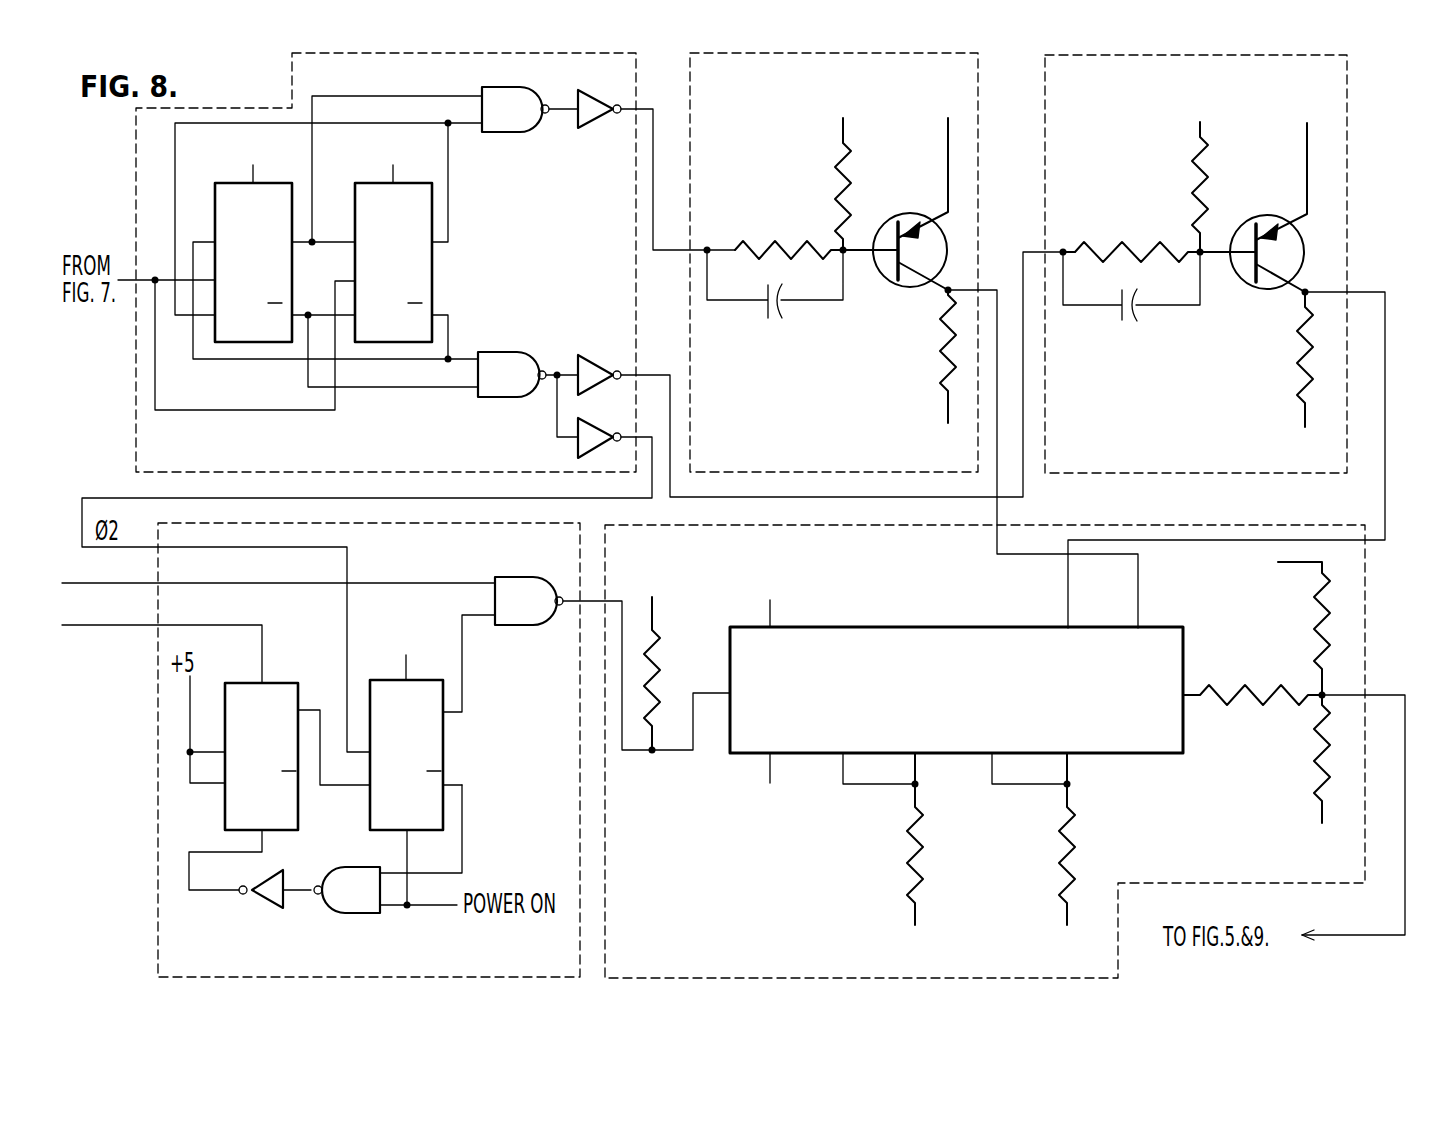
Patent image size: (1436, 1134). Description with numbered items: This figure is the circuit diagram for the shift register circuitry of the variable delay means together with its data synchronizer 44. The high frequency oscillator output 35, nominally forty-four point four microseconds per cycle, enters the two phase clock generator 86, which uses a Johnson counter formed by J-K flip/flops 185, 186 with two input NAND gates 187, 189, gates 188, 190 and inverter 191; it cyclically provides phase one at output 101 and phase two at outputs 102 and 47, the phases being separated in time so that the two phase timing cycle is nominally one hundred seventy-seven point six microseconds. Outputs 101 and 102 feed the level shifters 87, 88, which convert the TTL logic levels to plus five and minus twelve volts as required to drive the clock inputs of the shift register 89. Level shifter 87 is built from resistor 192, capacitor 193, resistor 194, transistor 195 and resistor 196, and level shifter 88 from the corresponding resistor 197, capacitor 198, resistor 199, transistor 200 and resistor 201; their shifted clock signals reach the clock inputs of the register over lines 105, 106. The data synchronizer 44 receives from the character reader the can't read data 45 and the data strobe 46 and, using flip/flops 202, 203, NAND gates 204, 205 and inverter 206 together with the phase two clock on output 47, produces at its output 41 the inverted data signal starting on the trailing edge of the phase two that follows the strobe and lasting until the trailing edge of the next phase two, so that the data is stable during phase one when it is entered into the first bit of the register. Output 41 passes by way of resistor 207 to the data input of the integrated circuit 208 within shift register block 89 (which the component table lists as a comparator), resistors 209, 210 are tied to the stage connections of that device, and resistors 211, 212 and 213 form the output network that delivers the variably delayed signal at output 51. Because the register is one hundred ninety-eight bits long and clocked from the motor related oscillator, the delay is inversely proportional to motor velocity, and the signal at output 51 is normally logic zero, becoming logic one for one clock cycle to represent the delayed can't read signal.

The high frequency oscillator output 35 is at (142, 280).
The data synchronizer output 41 is at (622, 755).
The data synchronizer 44 is at (155, 648).
The can't read data 45 is at (166, 582).
The data strobe 46 is at (166, 624).
The phase 2 output 47 is at (110, 472).
The shift register output 51 is at (1396, 692).
The two phase clock generator 86 is at (290, 58).
The level shifter 87 is at (688, 60).
The level shifter 88 is at (1043, 75).
The shift register 89 is at (878, 530).
The phase 1 output 101 is at (658, 154).
The phase 2 output 102 is at (664, 374).
The line from transistor 195 collector 105 is at (1000, 556).
The line from transistor 200 collector 106 is at (1152, 545).
The J-K flip/flop 185 is at (276, 284).
The J-K flip/flop 186 is at (416, 284).
The 2 input NAND gate 187 is at (520, 122).
The 3 input NAND gate 188 is at (592, 130).
The 2 input NAND gate 189 is at (515, 388).
The 3 input NAND gate 190 is at (610, 332).
The inverter 191 is at (574, 448).
The resistor 192 is at (774, 246).
The capacitor 193 is at (775, 320).
The resistor 194 is at (840, 160).
The transistor 195 is at (914, 208).
The resistor 196 is at (944, 366).
The resistor 197 is at (1102, 222).
The capacitor 198 is at (1128, 322).
The resistor 199 is at (1196, 162).
The transistor 200 is at (1274, 208).
The resistor 201 is at (1296, 352).
The J-K flip/flop 202 is at (292, 759).
The J-K flip/flop 203 is at (439, 759).
The 2 input NAND gate 204 is at (537, 615).
The 2 input NAND gate 205 is at (370, 902).
The inverter 206 is at (266, 900).
The resistor 207 is at (662, 665).
The comparator 208 is at (938, 679).
The resistor 209 is at (928, 818).
The resistor 210 is at (1078, 818).
The resistor 211 is at (1252, 690).
The resistor 212 is at (1312, 628).
The resistor 213 is at (1312, 770).